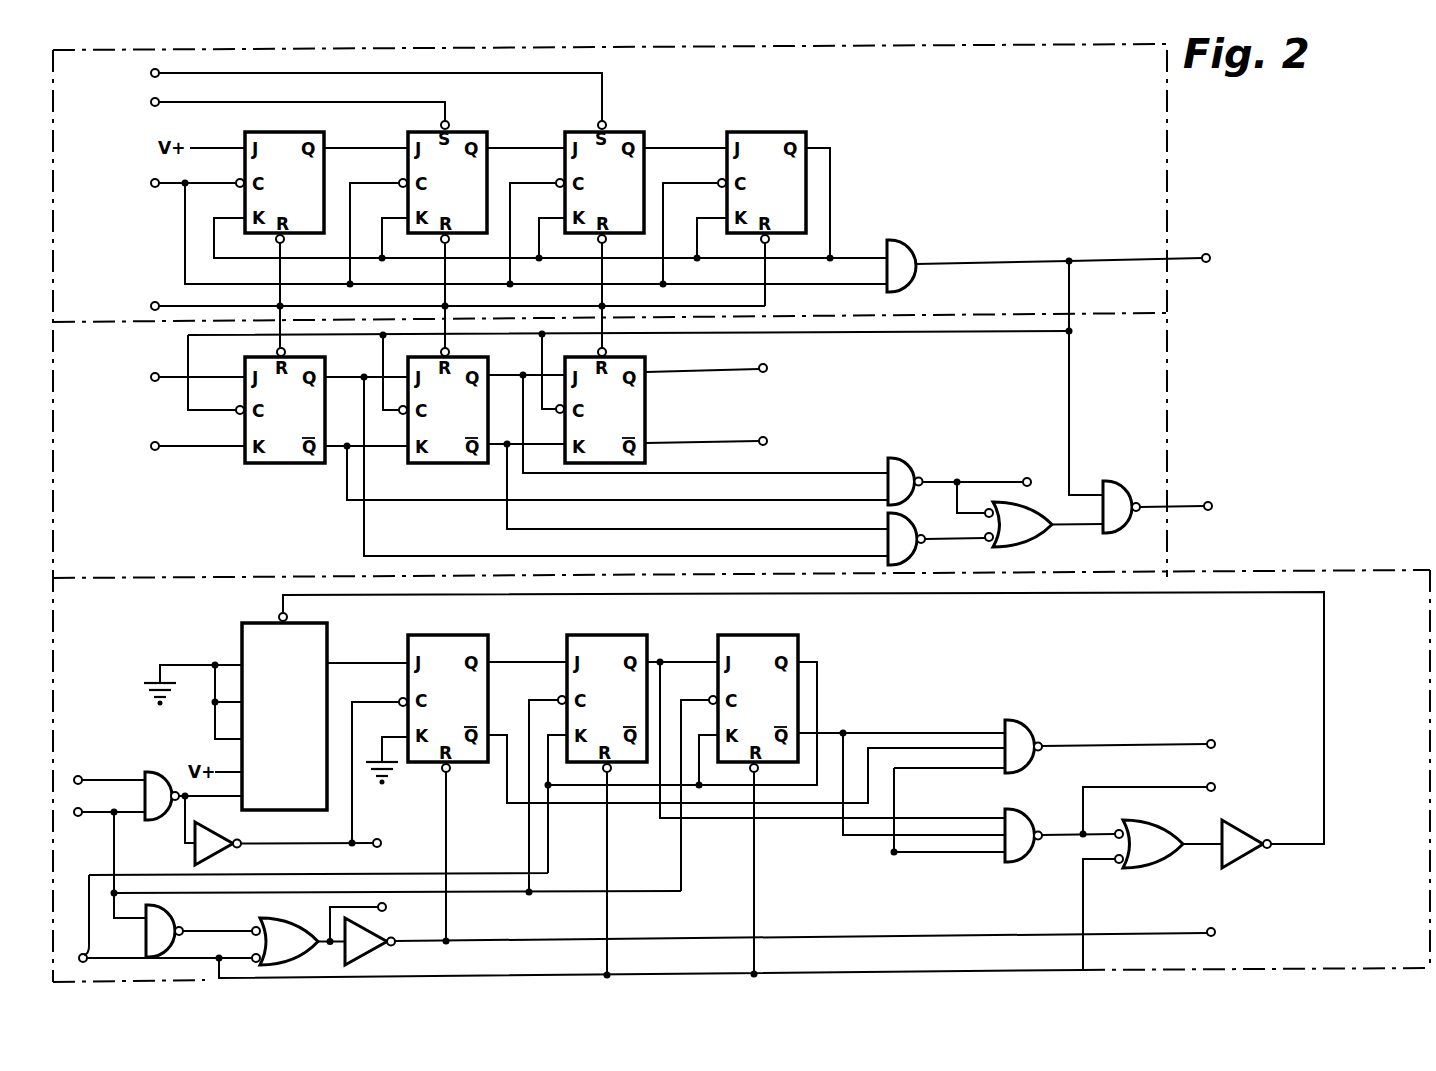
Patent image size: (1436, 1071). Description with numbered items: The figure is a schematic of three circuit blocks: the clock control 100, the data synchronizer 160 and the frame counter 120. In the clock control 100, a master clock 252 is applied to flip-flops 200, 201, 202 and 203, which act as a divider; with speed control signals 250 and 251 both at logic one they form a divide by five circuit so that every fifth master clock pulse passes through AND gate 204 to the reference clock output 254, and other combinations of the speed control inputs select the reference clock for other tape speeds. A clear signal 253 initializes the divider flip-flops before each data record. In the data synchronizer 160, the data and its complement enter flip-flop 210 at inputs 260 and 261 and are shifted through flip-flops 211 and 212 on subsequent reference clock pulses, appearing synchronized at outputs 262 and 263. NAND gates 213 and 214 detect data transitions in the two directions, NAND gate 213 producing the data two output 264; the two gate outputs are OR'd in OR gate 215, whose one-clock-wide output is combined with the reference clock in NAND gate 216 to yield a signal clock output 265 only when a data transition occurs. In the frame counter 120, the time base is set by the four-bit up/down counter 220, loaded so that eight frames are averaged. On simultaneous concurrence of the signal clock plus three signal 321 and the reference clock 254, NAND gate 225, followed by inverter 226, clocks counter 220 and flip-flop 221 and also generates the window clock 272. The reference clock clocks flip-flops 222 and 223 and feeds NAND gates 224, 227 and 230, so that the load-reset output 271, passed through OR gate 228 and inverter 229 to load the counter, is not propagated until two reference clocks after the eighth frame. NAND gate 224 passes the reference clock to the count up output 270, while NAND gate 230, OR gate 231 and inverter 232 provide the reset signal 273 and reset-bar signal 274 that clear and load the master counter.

The clock control 100 is at (1160, 180).
The data synchronizer 160 is at (1160, 438).
The frame counter 120 is at (1368, 582).
The flip-flop 200 is at (290, 118).
The flip-flop 201 is at (460, 132).
The flip-flop 202 is at (617, 132).
The flip-flop 203 is at (767, 132).
The AND gate 204 is at (922, 242).
The flip-flop 210 is at (318, 356).
The flip-flop 211 is at (481, 356).
The flip-flop 212 is at (636, 356).
The NAND gate 213 is at (912, 468).
The NAND gate 214 is at (912, 552).
The OR gate 215 is at (1018, 548).
The NAND gate 216 is at (1128, 490).
The 4-bit up/down counter 220 is at (327, 630).
The flip-flop 221 is at (480, 634).
The flip-flop 222 is at (640, 634).
The flip-flop 223 is at (790, 634).
The NAND gate 224 is at (1016, 722).
The NAND gate 225 is at (166, 764).
The inverter 226 is at (220, 855).
The NAND gate 227 is at (1016, 862).
The OR gate 228 is at (1150, 868).
The inverter 229 is at (1244, 862).
The NAND gate 230 is at (176, 904).
The OR gate 231 is at (302, 918).
The inverter 232 is at (372, 952).
The speed control signal 250 is at (151, 74).
The speed control signal 251 is at (151, 103).
The master clock 252 is at (151, 184).
The clear signal 253 is at (151, 306).
The reference clock output 254 is at (1205, 254).
The data input 260 is at (151, 377).
The data complement input 261 is at (151, 446).
The synchronized data output 262 is at (767, 370).
The synchronized data complement output 263 is at (767, 443).
The data 2 output 264 is at (1028, 478).
The signal clock output 265 is at (1208, 502).
The count up output 270 is at (1211, 740).
The load-reset output 271 is at (1212, 783).
The window clock 272 is at (377, 847).
The reset signal 273 is at (383, 911).
The reset-bar signal 274 is at (1211, 928).
The signal clock +3 signal 321 is at (82, 777).